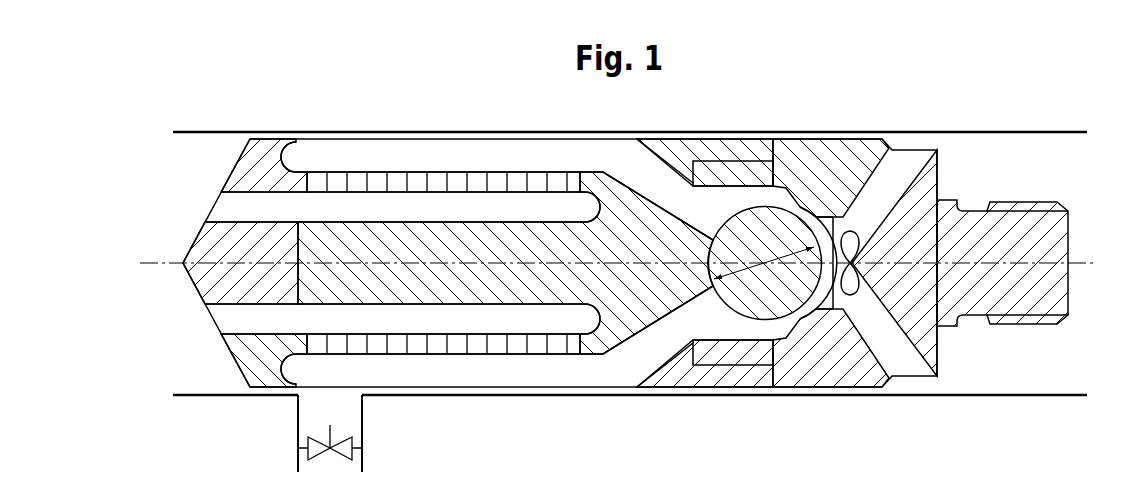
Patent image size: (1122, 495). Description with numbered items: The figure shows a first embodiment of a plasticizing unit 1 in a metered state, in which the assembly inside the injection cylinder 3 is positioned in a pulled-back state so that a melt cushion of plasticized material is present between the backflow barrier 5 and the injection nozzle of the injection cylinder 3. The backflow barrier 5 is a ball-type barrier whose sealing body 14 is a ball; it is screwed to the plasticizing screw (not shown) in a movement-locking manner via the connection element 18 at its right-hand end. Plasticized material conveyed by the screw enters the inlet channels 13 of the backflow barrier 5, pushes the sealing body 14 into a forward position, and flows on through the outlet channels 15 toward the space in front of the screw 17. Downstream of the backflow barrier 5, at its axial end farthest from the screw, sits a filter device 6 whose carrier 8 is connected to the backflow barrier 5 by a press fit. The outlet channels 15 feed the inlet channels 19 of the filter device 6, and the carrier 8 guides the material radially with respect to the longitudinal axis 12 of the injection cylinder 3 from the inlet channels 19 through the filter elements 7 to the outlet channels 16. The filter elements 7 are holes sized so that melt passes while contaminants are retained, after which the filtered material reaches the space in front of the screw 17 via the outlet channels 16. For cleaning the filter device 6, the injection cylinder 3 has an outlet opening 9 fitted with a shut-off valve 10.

The plasticizing unit 1 is at (98, 457).
The injection cylinder 3 is at (197, 131).
The backflow barrier 5 is at (800, 113).
The filter device 6 is at (450, 113).
The filter elements 7 is at (357, 178).
The carrier 8 is at (638, 254).
The outlet opening 9 is at (342, 412).
The shut-off valve 10 is at (357, 457).
The longitudinal axis 12 is at (152, 255).
The inlet channels 13 is at (893, 175).
The sealing body 14 is at (778, 293).
The outlet channels 15 is at (650, 178).
The outlet channels 16 is at (330, 207).
The space in front of the screw 17 is at (211, 375).
The connection element 18 is at (993, 240).
The inlet channels 19 is at (550, 158).